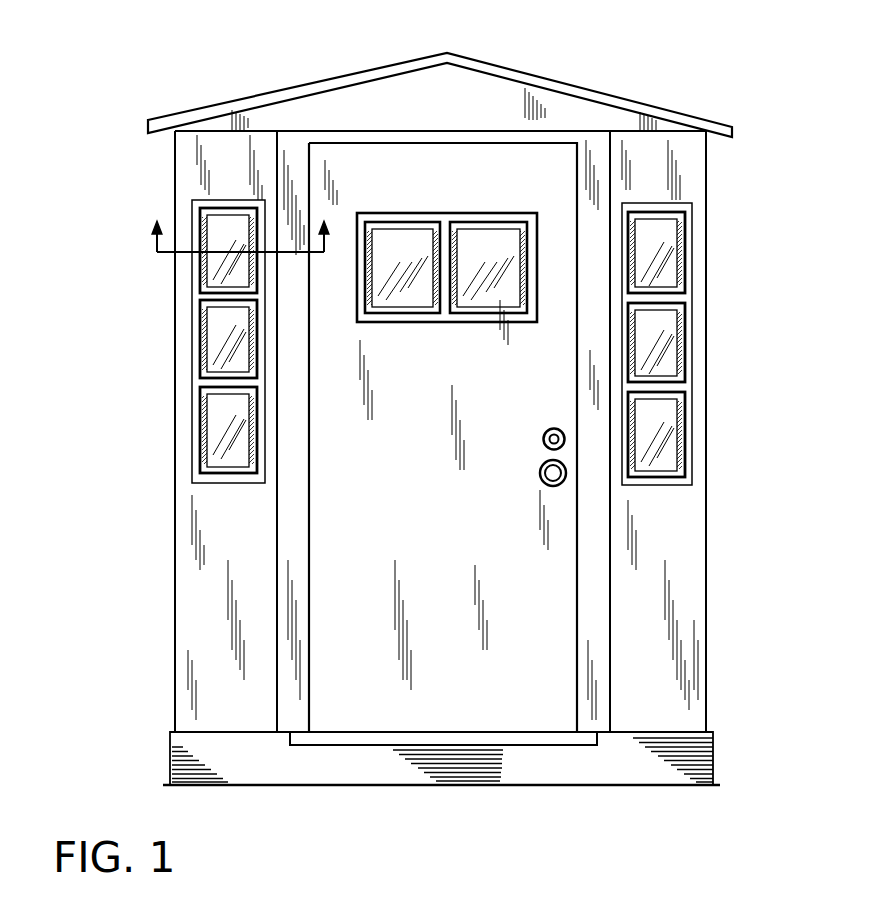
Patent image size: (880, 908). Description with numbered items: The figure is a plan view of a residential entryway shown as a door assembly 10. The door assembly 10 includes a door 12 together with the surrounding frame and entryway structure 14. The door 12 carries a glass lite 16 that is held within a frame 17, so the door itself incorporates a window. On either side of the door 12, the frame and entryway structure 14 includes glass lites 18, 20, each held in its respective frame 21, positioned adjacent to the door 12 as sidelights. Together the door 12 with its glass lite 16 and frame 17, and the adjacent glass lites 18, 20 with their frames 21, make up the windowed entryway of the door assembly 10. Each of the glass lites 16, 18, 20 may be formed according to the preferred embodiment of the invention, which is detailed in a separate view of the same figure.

The door assembly 10 is at (660, 86).
The door 12 is at (452, 429).
The frame and entryway structure 14 is at (680, 167).
The glass lite 16 is at (447, 269).
The frame 17 is at (513, 320).
The glass lite 18 is at (198, 337).
The glass lite 20 is at (688, 268).
The frames 21 is at (198, 424).